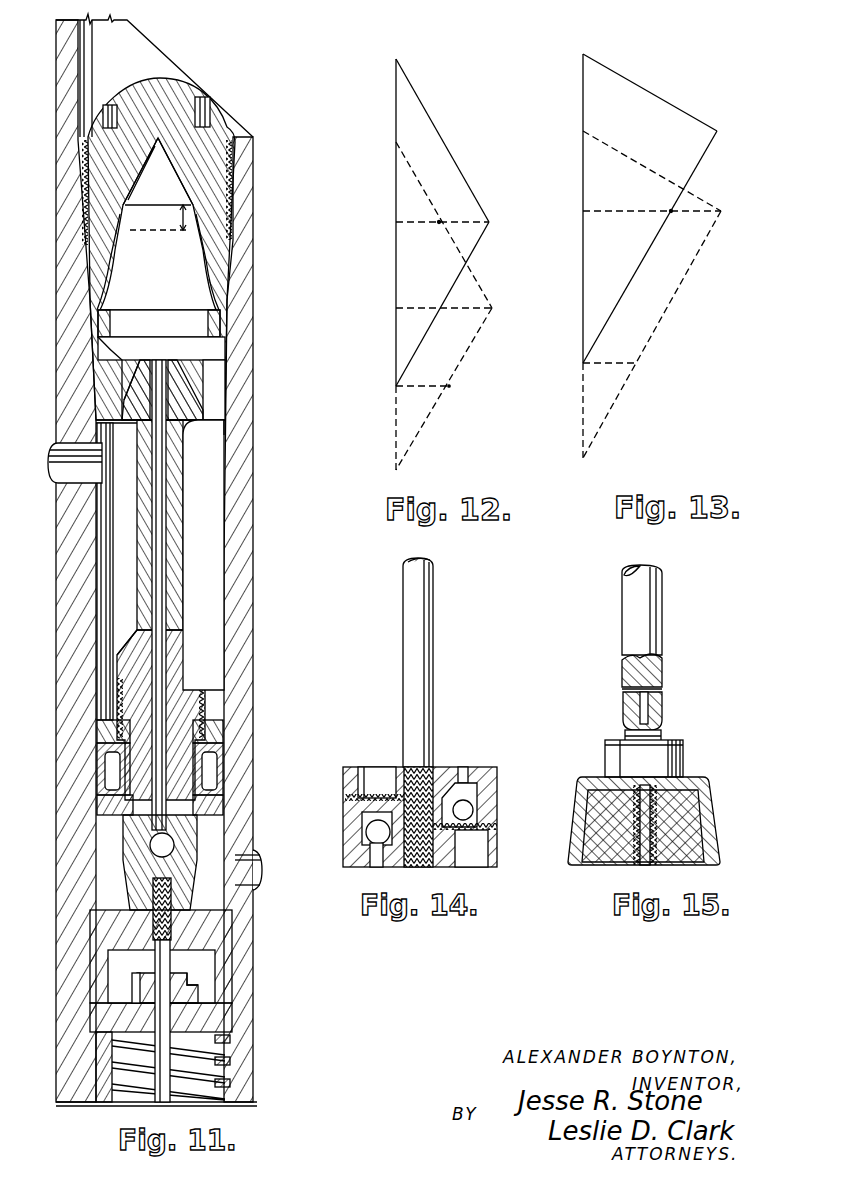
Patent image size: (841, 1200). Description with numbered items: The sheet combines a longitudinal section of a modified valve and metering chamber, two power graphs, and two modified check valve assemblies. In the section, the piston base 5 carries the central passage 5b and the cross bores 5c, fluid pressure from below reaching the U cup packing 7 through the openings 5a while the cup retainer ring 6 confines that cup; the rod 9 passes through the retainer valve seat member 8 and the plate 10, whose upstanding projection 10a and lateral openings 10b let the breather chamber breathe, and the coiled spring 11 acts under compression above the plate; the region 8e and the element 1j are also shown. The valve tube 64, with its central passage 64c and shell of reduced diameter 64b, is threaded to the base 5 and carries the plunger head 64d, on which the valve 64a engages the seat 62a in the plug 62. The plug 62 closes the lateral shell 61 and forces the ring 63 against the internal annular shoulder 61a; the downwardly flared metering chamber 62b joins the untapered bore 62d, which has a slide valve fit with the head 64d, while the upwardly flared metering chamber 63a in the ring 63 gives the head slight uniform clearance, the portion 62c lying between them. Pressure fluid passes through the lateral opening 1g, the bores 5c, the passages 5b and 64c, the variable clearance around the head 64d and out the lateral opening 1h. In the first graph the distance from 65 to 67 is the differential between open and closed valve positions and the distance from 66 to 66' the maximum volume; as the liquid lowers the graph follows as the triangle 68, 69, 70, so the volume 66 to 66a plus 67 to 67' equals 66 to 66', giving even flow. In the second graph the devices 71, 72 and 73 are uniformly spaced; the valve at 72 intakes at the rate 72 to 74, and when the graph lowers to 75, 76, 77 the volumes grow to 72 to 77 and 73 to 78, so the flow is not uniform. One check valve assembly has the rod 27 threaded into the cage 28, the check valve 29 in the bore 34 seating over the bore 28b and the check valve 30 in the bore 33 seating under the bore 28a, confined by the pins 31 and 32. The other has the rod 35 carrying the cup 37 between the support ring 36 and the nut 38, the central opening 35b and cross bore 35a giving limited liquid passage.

In FIG. 11, the tubing string 1j is at (128, 34).
In FIG. 11, the lateral shell 61 is at (248, 538).
In FIG. 11, the plug 62 is at (213, 156).
In FIG. 11, the seat 62a is at (185, 180).
In FIG. 11, the downwardly flared metering chamber 62b is at (192, 265).
In FIG. 11, the ring 62c is at (222, 323).
In FIG. 11, the untapered bore 62d is at (185, 221).
In FIG. 11, the ring 63 is at (223, 407).
In FIG. 11, the upwardly flared metering chamber 63a is at (202, 360).
In FIG. 11, the valve tube 64 is at (130, 670).
In FIG. 11, the valve 64a is at (192, 382).
In FIG. 11, the shell of reduced diameter 64b is at (177, 497).
In FIG. 11, the central passage 64c is at (165, 642).
In FIG. 11, the plunger head 64d is at (132, 407).
In FIG. 11, the lateral opening 1h is at (60, 463).
In FIG. 11, the internal annular shoulder 61a is at (225, 420).
In FIG. 11, the central passage 5b is at (168, 702).
In FIG. 11, the cup retainer ring 6 is at (225, 737).
In FIG. 11, the U cup packing 7 is at (225, 763).
In FIG. 11, the openings 5a is at (102, 807).
In FIG. 11, the piston base 5 is at (207, 813).
In FIG. 11, the cross bores 5c is at (165, 843).
In FIG. 11, the lateral opening 1g is at (247, 877).
In FIG. 11, the retainer valve seat member 8 is at (228, 925).
In FIG. 11, the cavity 8e is at (207, 968).
In FIG. 11, the plate 10 is at (217, 1010).
In FIG. 11, the upstanding projection 10a is at (187, 982).
In FIG. 11, the lateral openings 10b is at (140, 982).
In FIG. 11, the coiled spring 11 is at (227, 1053).
In FIG. 11, the rod 9 is at (160, 1090).
In FIG. 12, the graph point 65 is at (394, 59).
In FIG. 12, the valve position point 66 is at (422, 222).
In FIG. 12, the graph point 66' is at (458, 222).
In FIG. 12, the graph point 66a is at (439, 224).
In FIG. 12, the valve position point 67 is at (408, 386).
In FIG. 12, the graph point 67' is at (464, 386).
In FIG. 12, the graph point 68 is at (398, 142).
In FIG. 12, the graph point 69 is at (456, 384).
In FIG. 12, the graph point 70 is at (398, 470).
In FIG. 13, the device 71 is at (581, 54).
In FIG. 13, the device 72 is at (582, 211).
In FIG. 13, the device 73 is at (581, 363).
In FIG. 13, the graph point 74 is at (669, 213).
In FIG. 13, the graph point 75 is at (581, 131).
In FIG. 13, the graph point 76 is at (585, 458).
In FIG. 13, the graph point 77 is at (666, 329).
In FIG. 13, the graph point 78 is at (624, 363).
In FIG. 14, the rod 27 is at (420, 660).
In FIG. 14, the check valve housing member 28 is at (485, 783).
In FIG. 14, the bore 28a is at (468, 770).
In FIG. 14, the bore 28b is at (378, 862).
In FIG. 14, the check valve 29 is at (370, 828).
In FIG. 14, the check valve 30 is at (470, 808).
In FIG. 14, the pin 31 is at (497, 830).
In FIG. 14, the pin 32 is at (345, 797).
In FIG. 14, the bore 33 is at (470, 860).
In FIG. 14, the bore 34 is at (372, 785).
In FIG. 15, the rod 35 is at (638, 607).
In FIG. 15, the cross bore 35a is at (648, 688).
In FIG. 15, the central opening 35b is at (625, 703).
In FIG. 15, the support ring 36 is at (690, 842).
In FIG. 15, the cup 37 is at (713, 803).
In FIG. 15, the nut 38 is at (676, 757).